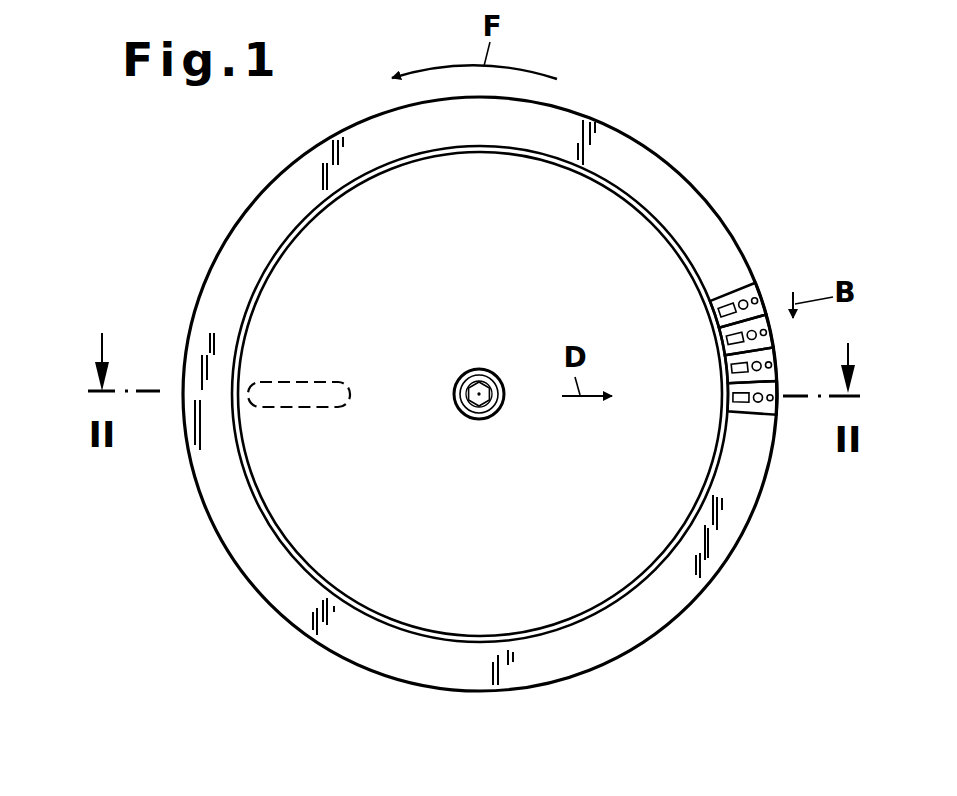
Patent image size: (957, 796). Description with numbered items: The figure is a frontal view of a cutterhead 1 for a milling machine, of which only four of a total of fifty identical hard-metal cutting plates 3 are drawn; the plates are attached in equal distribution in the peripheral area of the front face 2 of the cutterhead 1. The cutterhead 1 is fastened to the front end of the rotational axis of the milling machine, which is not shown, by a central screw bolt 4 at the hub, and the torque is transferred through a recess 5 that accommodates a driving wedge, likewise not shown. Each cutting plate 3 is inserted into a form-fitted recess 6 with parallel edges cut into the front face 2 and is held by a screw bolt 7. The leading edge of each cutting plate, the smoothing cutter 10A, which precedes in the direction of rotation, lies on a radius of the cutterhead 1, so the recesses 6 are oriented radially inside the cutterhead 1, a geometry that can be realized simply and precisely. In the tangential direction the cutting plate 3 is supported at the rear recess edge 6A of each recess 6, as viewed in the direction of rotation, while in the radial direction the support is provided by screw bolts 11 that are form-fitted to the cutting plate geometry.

The cutterhead 1 is at (636, 127).
The front face 2 is at (656, 188).
The cutting plate 3 is at (753, 300).
The central screw bolt 4 is at (490, 417).
The recess 5 is at (295, 400).
The recess 6 is at (715, 311).
The rear recess edge 6A is at (728, 404).
The screw bolt 7 is at (772, 368).
The smoothing cutter 10A is at (779, 383).
The screw bolt 11 is at (723, 342).